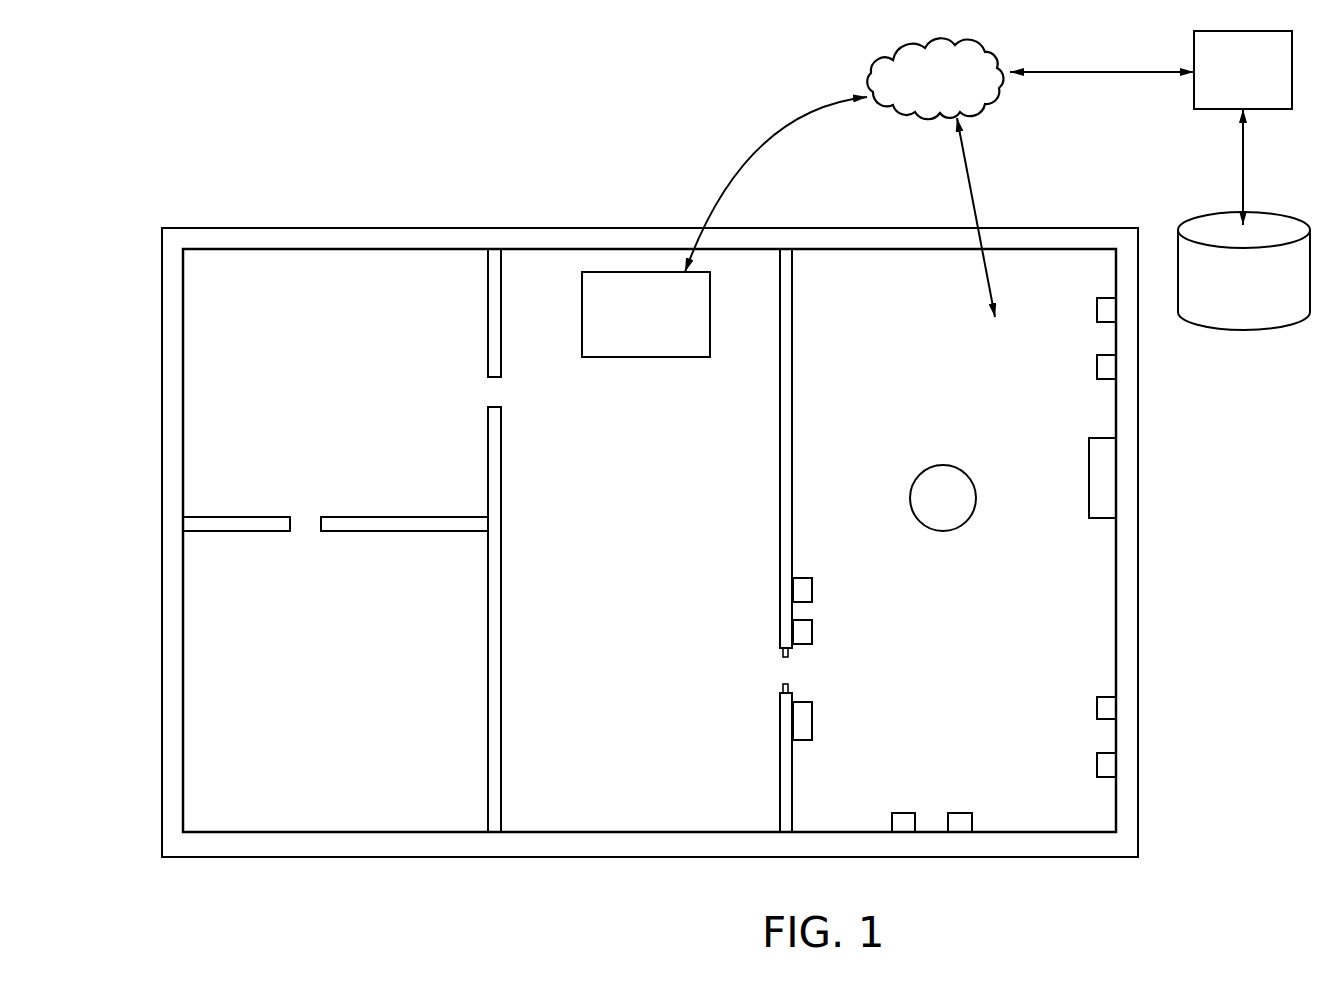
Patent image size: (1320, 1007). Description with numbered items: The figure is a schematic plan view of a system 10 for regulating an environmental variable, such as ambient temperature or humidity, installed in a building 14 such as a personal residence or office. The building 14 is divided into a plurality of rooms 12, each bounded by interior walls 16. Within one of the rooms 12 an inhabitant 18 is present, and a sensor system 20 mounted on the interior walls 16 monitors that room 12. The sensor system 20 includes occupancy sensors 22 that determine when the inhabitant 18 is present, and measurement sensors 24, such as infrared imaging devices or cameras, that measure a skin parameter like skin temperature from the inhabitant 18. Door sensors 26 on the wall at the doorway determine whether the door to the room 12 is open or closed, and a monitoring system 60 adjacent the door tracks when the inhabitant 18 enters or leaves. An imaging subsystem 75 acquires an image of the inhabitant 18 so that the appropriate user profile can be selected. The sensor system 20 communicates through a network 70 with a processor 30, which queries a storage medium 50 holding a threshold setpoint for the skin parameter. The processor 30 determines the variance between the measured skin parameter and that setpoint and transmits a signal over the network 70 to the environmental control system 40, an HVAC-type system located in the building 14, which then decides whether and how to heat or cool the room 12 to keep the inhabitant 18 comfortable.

The system 10 is at (258, 147).
The room 12 is at (317, 380).
The building 14 is at (1139, 462).
The interior wall 16 is at (793, 338).
The inhabitant 18 is at (930, 515).
The sensor system 20 is at (1047, 290).
The occupancy sensor 22 is at (1097, 310).
The measurement sensor 24 is at (1097, 363).
The door sensor 26 is at (783, 655).
The processor 30 is at (1230, 87).
The environmental control system 40 is at (633, 324).
The storage medium 50 is at (1231, 303).
The monitoring system 60 is at (800, 720).
The network 70 is at (932, 90).
The imaging subsystem 75 is at (1095, 472).